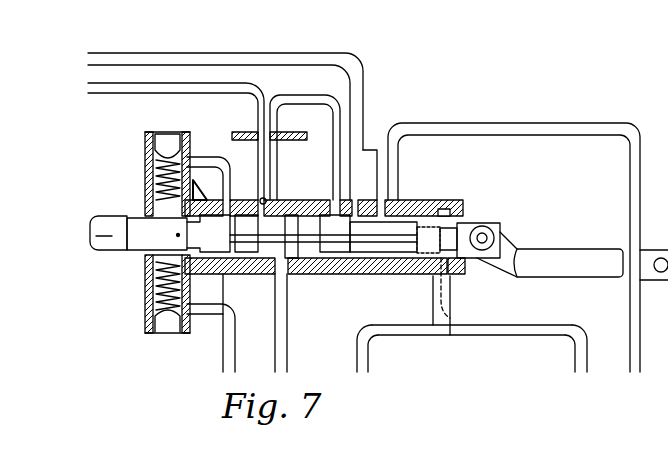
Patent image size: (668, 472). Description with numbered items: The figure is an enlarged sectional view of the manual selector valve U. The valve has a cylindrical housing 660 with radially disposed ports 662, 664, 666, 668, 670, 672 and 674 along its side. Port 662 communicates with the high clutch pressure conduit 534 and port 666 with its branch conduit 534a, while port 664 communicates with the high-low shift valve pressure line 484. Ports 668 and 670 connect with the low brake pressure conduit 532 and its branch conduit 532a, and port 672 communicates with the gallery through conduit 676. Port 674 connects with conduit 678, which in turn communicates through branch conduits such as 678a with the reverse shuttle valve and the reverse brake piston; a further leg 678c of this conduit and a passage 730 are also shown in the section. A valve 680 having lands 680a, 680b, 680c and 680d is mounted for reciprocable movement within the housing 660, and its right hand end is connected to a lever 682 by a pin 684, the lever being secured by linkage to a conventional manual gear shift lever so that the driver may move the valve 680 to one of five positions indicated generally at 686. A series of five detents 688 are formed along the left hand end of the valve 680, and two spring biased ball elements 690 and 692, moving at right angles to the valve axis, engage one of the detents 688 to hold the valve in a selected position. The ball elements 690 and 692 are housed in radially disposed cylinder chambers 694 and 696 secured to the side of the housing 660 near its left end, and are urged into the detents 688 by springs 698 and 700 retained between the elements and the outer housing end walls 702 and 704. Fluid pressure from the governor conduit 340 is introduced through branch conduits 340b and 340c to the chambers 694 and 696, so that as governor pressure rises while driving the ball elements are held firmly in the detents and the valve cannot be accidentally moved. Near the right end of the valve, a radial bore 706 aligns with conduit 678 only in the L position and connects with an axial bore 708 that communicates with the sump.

The low brake pressure conduit 532 is at (364, 59).
The branch conduit 532a is at (374, 150).
The high clutch pressure conduit 534 is at (202, 90).
The branch conduit 534a is at (338, 114).
The port 666 is at (338, 193).
The port 662 is at (265, 199).
The passage 730 is at (318, 190).
The port 670 is at (373, 204).
The port 668 is at (366, 199).
The port 672 is at (468, 216).
The axial bore 708 is at (468, 219).
The land 680a is at (265, 268).
The valve 680 is at (400, 270).
The port 674 is at (449, 275).
The five positions 686 is at (133, 243).
The detents 688 is at (140, 214).
The spring biased ball element 690 is at (143, 200).
The cylindrical housing 660 is at (404, 275).
The land 680b is at (291, 265).
The land 680c is at (342, 265).
The pin 684 is at (499, 233).
The lever 682 is at (566, 273).
The conduit 676 is at (535, 124).
The manual selector valve U is at (408, 152).
The conduit 678 is at (452, 298).
The branch conduit 678a is at (368, 360).
The conduit leg 678c is at (575, 358).
The land 680d is at (450, 280).
The radial bore 706 is at (450, 314).
The port 664 is at (283, 274).
The high-low shift valve pressure line 484 is at (288, 343).
The branch conduit 340c is at (205, 157).
The branch conduit 340b is at (203, 316).
The governor conduit 340 is at (227, 355).
The cylinder chamber 694 is at (146, 134).
The outer housing end wall 702 is at (158, 134).
The spring 698 is at (147, 145).
The cylinder chamber 696 is at (142, 302).
The spring biased ball element 692 is at (142, 259).
The spring 700 is at (176, 287).
The outer housing end wall 704 is at (160, 328).